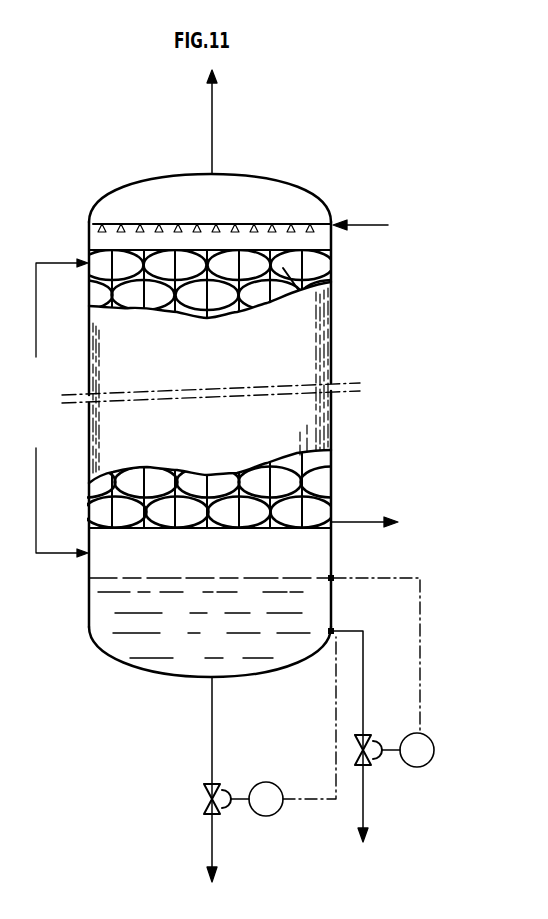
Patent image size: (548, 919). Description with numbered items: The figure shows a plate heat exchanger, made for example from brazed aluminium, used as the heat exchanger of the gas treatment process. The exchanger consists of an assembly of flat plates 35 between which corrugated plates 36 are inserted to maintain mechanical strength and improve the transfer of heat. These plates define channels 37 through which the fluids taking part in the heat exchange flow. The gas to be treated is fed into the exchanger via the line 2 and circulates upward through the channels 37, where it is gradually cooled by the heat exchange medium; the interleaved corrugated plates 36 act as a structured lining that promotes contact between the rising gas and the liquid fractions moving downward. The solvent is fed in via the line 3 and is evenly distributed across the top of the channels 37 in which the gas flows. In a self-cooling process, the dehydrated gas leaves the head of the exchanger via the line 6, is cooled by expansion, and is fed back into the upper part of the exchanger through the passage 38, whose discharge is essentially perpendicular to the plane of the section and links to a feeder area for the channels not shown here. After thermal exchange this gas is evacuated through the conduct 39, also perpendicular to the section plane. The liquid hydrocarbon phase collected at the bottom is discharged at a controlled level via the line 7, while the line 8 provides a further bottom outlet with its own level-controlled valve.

The line 2 is at (36, 449).
The line 3 is at (363, 224).
The line 6 is at (212, 120).
The line 7 is at (212, 747).
The side liquid outlet 8 is at (364, 630).
The flat plates 35 is at (326, 260).
The corrugated plates 36 is at (326, 276).
The channels 37 is at (333, 308).
The passage 38 is at (36, 357).
The conduct 39 is at (382, 520).